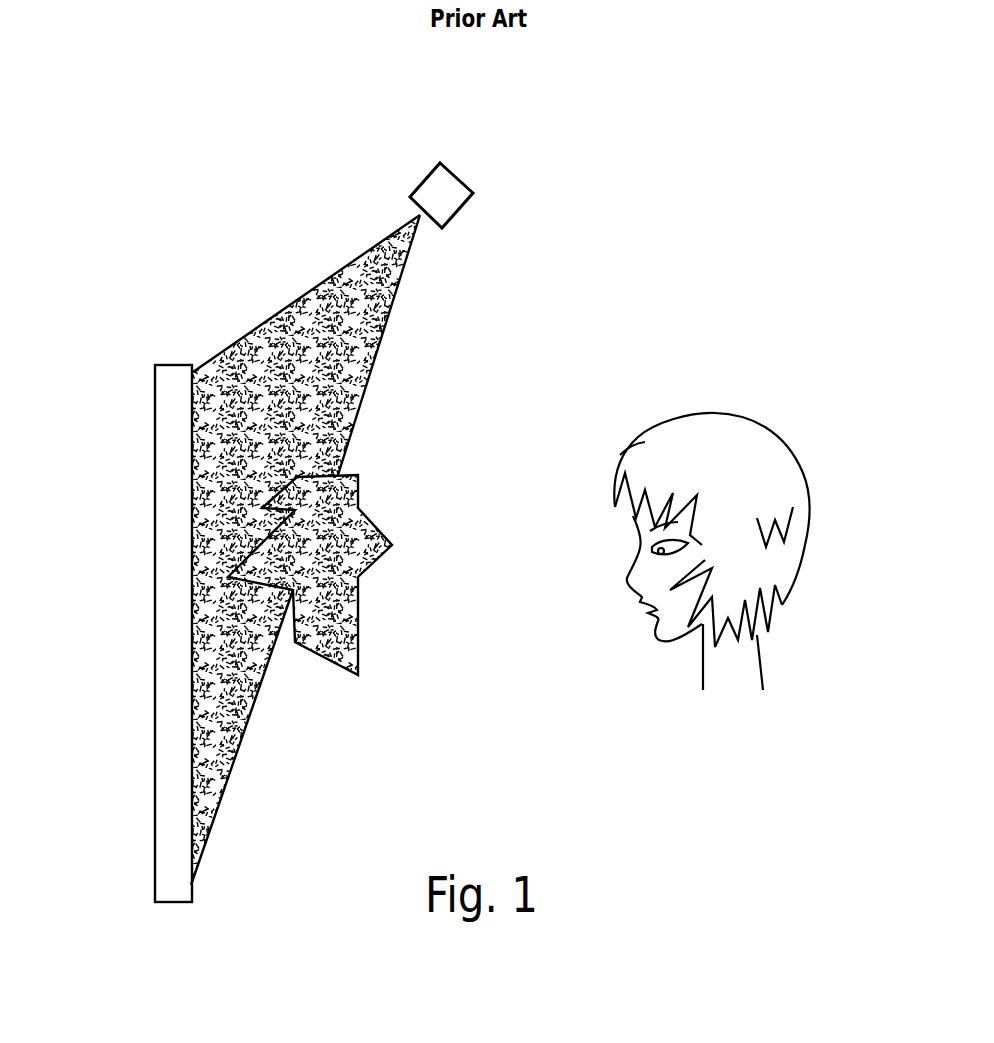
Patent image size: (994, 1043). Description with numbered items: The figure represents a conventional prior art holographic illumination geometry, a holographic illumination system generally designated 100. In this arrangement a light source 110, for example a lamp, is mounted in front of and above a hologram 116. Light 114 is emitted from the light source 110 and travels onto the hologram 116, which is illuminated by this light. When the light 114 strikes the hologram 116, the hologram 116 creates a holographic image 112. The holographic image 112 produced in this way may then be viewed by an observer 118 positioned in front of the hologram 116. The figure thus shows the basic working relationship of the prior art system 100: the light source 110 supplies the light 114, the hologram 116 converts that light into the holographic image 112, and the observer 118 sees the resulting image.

The holographic illumination system 100 is at (645, 178).
The light source 110 is at (432, 193).
The holographic image 112 is at (355, 622).
The light 114 is at (285, 337).
The hologram 116 is at (173, 623).
The observer 118 is at (735, 453).